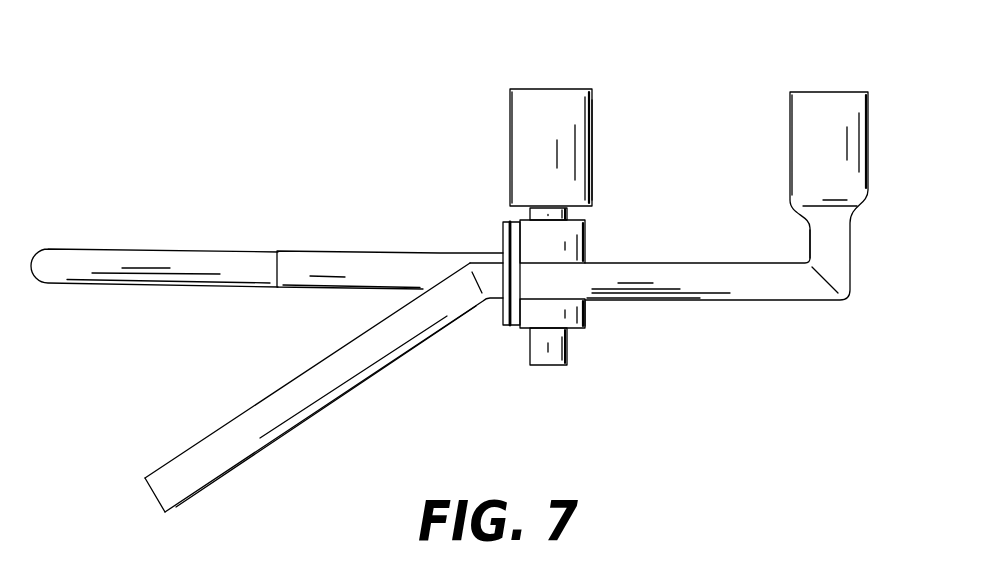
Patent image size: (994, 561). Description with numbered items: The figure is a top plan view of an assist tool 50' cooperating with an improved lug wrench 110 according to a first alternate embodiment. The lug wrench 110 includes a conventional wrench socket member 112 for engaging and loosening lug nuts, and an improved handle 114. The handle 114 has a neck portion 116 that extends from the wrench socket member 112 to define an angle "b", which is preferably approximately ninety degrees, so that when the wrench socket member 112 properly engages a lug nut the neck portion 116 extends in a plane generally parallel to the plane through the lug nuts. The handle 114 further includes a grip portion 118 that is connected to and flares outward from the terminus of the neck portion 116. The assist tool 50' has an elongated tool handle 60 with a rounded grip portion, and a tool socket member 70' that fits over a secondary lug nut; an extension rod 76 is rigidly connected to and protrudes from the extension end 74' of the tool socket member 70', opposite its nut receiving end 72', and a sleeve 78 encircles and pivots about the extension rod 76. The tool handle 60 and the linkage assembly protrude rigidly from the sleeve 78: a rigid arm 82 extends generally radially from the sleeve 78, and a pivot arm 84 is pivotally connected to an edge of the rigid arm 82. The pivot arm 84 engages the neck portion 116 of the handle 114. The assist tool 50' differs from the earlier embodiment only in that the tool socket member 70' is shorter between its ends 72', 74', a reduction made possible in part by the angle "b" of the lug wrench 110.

The assist tool 50' is at (390, 201).
The tool handle 60 is at (166, 246).
The tool socket member 70' is at (649, 150).
The nut receiving end 72' is at (575, 111).
The extension end 74' is at (599, 215).
The extension rod 76 is at (528, 212).
The sleeve 78 is at (590, 308).
The rigid arm 82 is at (522, 326).
The pivot arm 84 is at (500, 313).
The lug wrench 110 is at (760, 279).
The wrench socket member 112 is at (870, 132).
The handle 114 is at (258, 394).
The neck portion 116 is at (725, 302).
The grip portion 118 is at (265, 443).
The angle b is at (801, 223).